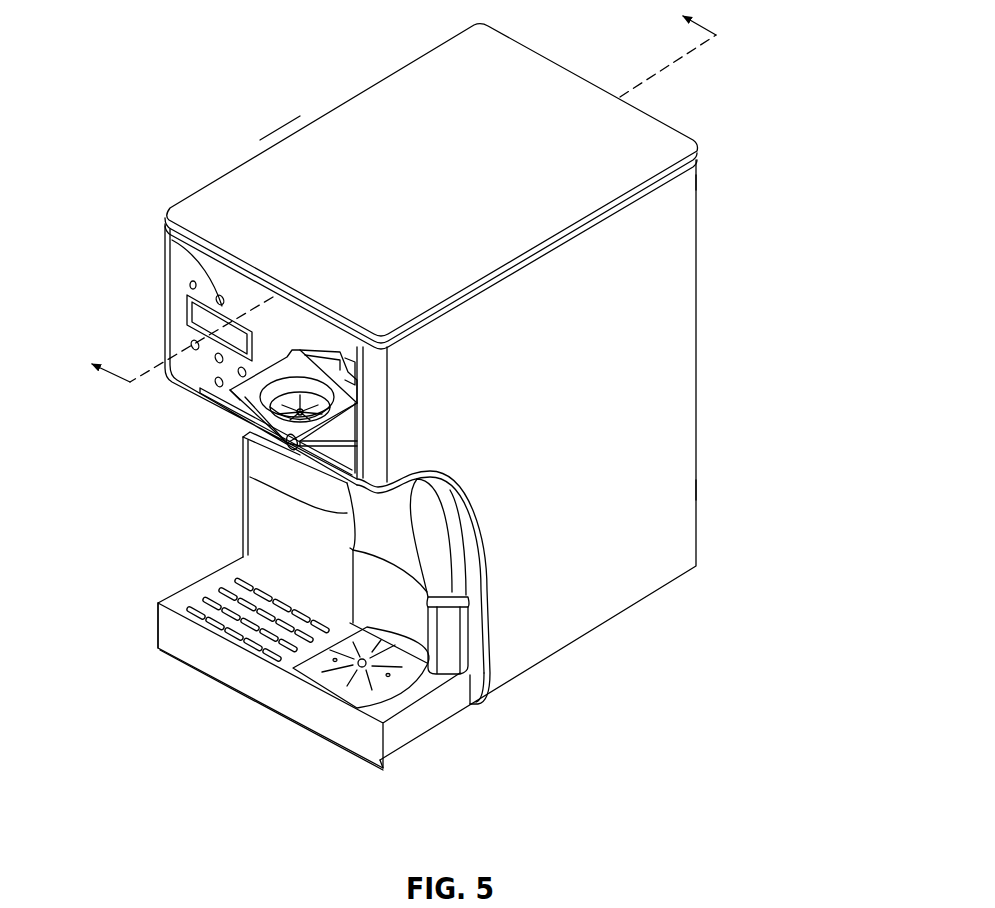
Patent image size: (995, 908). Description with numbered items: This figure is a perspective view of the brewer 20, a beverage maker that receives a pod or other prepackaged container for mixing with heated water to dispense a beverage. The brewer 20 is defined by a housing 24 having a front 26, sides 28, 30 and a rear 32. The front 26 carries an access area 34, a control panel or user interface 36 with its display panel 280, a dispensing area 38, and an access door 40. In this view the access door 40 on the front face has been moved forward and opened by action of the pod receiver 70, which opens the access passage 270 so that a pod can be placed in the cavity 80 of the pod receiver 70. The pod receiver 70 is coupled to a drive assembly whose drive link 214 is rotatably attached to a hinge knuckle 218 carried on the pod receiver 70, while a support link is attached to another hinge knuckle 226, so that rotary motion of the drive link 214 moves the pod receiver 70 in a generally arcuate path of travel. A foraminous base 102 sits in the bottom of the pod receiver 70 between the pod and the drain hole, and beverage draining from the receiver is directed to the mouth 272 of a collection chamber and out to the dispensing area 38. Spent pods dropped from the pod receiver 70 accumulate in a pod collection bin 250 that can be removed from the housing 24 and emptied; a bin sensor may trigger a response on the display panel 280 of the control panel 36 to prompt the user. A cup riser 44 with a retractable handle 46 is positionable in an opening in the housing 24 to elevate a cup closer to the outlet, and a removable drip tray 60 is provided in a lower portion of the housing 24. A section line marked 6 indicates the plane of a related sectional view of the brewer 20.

The brewer 20 is at (163, 44).
The housing 24 is at (637, 365).
The front 26 is at (127, 560).
The side 28 is at (678, 494).
The side 30 is at (285, 141).
The rear 32 is at (697, 179).
The access area 34 is at (226, 724).
The control panel 36 is at (184, 332).
The dispensing area 38 is at (405, 676).
The access door 40 is at (217, 418).
The cup riser 44 is at (458, 651).
The handle 46 is at (456, 676).
The drip tray 60 is at (390, 741).
The pod receiver 70 is at (245, 398).
The cavity 80 is at (283, 388).
The foraminous base 102 is at (298, 414).
The drive link 214 is at (331, 355).
The hinge knuckle 218 is at (297, 351).
The hinge knuckle 226 is at (250, 478).
The pod collection bin 250 is at (311, 513).
The access passage 270 is at (222, 306).
The mouth 272 is at (350, 363).
The display panel 280 is at (193, 311).
The section line 6- 6 is at (391, 191).